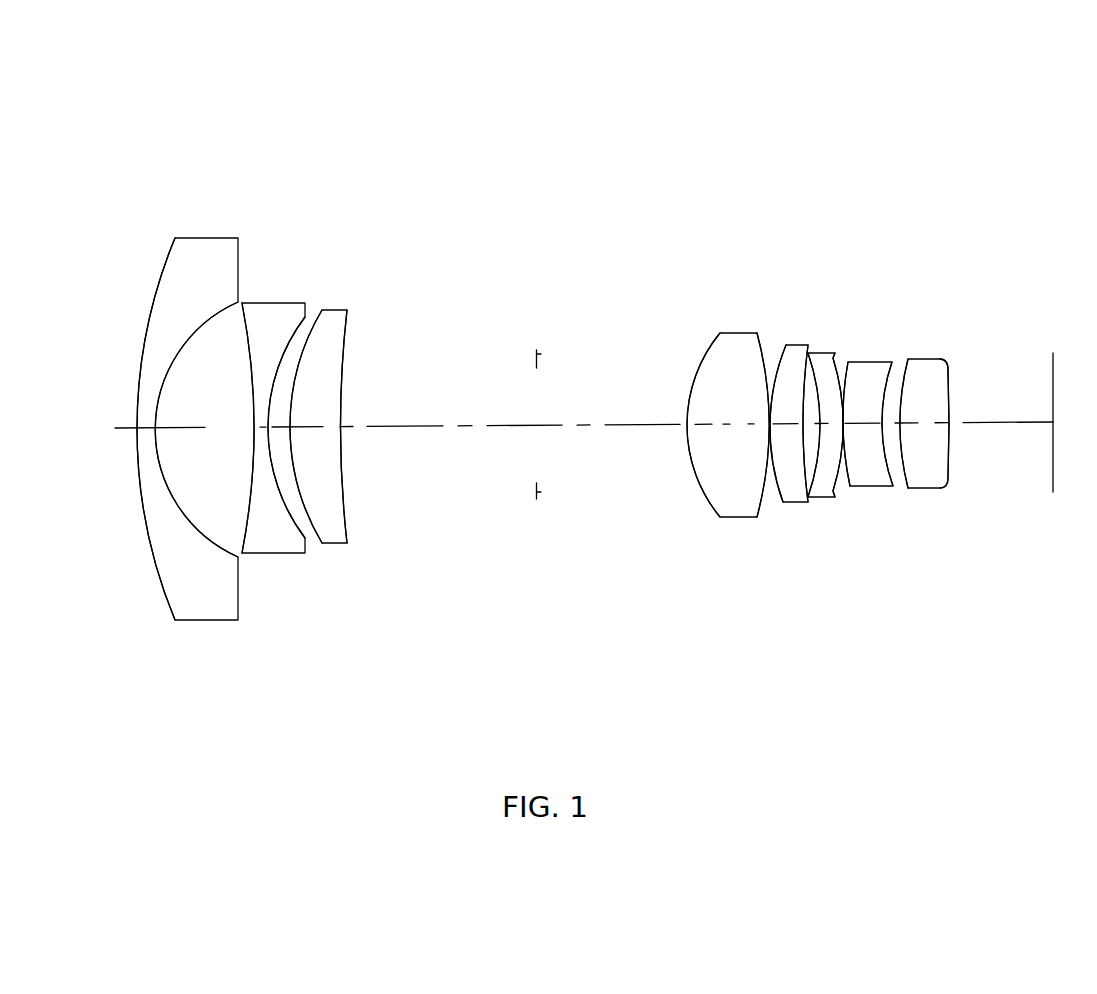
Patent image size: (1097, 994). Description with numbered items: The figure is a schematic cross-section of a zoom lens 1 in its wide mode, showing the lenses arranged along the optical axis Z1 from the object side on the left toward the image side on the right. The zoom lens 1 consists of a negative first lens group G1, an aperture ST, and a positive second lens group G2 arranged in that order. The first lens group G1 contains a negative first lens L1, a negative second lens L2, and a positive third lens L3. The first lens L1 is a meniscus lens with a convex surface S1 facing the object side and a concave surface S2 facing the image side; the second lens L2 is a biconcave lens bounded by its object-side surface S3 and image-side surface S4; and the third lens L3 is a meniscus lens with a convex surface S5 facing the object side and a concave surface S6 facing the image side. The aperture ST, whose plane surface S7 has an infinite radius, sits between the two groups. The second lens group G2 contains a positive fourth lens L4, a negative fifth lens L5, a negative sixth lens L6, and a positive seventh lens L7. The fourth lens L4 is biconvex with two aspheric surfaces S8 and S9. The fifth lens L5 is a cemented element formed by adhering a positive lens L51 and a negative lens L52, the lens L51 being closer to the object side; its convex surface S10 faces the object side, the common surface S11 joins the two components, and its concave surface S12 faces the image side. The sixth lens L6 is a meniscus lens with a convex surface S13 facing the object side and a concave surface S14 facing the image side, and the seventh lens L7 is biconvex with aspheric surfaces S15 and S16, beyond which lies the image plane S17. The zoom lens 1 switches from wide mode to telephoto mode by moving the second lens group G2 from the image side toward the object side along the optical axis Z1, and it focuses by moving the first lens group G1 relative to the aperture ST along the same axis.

The zoom lens 1 is at (1062, 129).
The optical axis Z1 is at (123, 430).
The negative first lens group G1 is at (402, 138).
The positive second lens group G2 is at (993, 191).
The negative first lens L1 is at (198, 263).
The negative second lens L2 is at (267, 313).
The positive third lens L3 is at (332, 313).
The positive fourth lens L4 is at (738, 343).
The negative fifth lens L5 is at (900, 242).
The positive lens L51 is at (790, 360).
The negative lens L52 is at (822, 358).
The negative sixth lens L6 is at (877, 367).
The positive seventh lens L7 is at (933, 373).
The aperture ST is at (541, 354).
The convex surface S1 is at (168, 603).
The concave surface S2 is at (220, 550).
The object-side surface of second lens S3 is at (258, 533).
The image-side surface of second lens S4 is at (292, 553).
The convex surface S5 is at (317, 543).
The concave surface S6 is at (343, 493).
The aperture surface S7 is at (541, 492).
The aspheric surface S8 is at (708, 500).
The aspheric surface S9 is at (755, 517).
The convex surface S10 is at (781, 503).
The cemented surface S11 is at (803, 498).
The concave surface S12 is at (825, 490).
The convex surface S13 is at (862, 487).
The concave surface S14 is at (884, 486).
The aspheric surface S15 is at (909, 488).
The aspheric surface S16 is at (948, 462).
The image plane S17 is at (1053, 475).